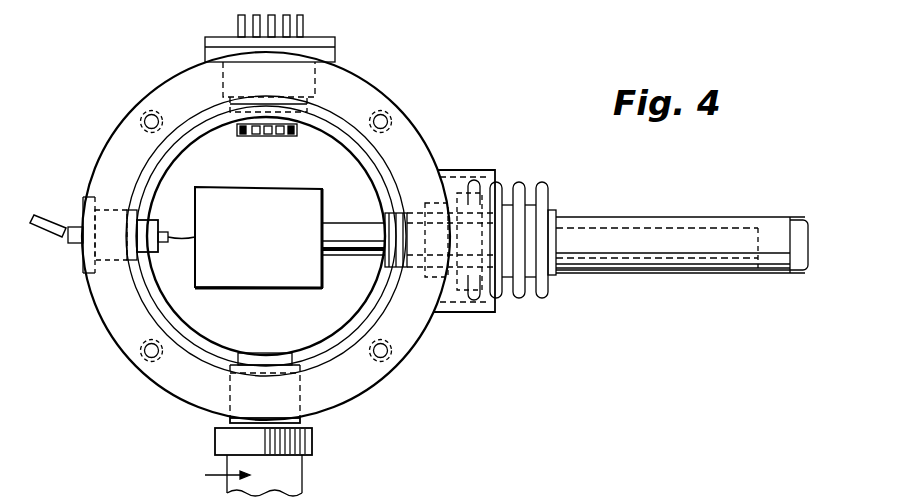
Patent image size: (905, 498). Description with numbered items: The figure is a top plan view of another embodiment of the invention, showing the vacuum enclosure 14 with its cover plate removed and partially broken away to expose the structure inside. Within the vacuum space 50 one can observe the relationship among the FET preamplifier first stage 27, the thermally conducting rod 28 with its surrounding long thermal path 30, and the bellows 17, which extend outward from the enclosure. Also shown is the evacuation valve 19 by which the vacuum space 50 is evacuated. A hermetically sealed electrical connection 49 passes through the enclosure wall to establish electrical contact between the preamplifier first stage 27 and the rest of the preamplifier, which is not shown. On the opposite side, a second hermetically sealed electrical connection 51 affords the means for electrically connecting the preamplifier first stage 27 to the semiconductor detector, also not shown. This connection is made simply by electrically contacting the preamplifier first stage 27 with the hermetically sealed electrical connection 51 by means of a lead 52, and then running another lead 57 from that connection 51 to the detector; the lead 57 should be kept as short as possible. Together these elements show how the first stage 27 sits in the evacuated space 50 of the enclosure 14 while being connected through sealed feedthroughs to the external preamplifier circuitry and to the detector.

The vacuum enclosure 14 is at (407, 155).
The bellows 17 is at (542, 298).
The evacuation valve 19 is at (307, 470).
The FET preamplifier first stage 27 is at (305, 210).
The thermally conducting rod 28 is at (640, 240).
The long thermal path 30 is at (718, 270).
The hermetically sealed electrical connection 49 is at (288, 66).
The vacuum space 50 is at (350, 297).
The hermetically sealed electrical connection 51 is at (112, 210).
The lead 52 is at (183, 241).
The lead 57 is at (50, 237).